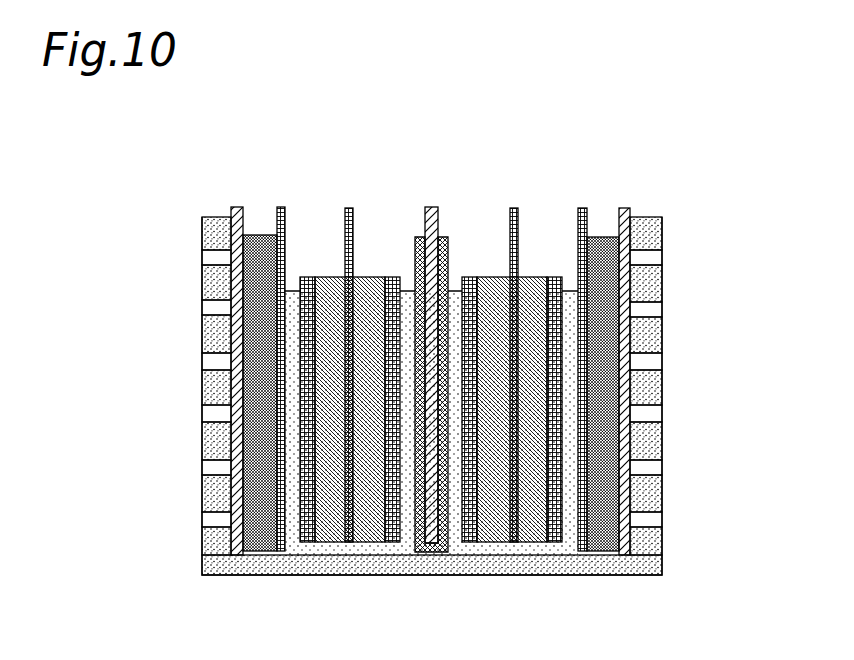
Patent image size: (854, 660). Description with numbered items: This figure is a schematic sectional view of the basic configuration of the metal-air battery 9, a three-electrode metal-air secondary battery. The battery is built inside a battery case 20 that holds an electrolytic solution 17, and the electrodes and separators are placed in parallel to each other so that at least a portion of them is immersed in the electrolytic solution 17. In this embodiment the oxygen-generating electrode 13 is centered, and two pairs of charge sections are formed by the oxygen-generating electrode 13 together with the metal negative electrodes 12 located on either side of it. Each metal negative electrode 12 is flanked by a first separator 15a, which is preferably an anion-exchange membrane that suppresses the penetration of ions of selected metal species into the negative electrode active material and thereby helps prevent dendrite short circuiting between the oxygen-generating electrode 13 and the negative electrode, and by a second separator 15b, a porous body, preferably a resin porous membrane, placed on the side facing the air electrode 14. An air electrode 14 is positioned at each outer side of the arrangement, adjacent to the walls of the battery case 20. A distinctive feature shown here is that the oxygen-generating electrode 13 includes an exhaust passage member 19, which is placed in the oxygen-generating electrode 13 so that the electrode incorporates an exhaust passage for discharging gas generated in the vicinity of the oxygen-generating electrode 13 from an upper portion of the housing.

The metal-air battery 9 is at (96, 135).
The metal negative electrode 12 is at (368, 213).
The oxygen-generating electrode 13 is at (445, 225).
The air electrode 14 is at (258, 213).
The first separator 15a is at (388, 545).
The second separator 15b is at (305, 542).
The electrolytic solution 17 is at (202, 488).
The exhaust passage member 19 is at (428, 230).
The battery case 20 is at (665, 275).